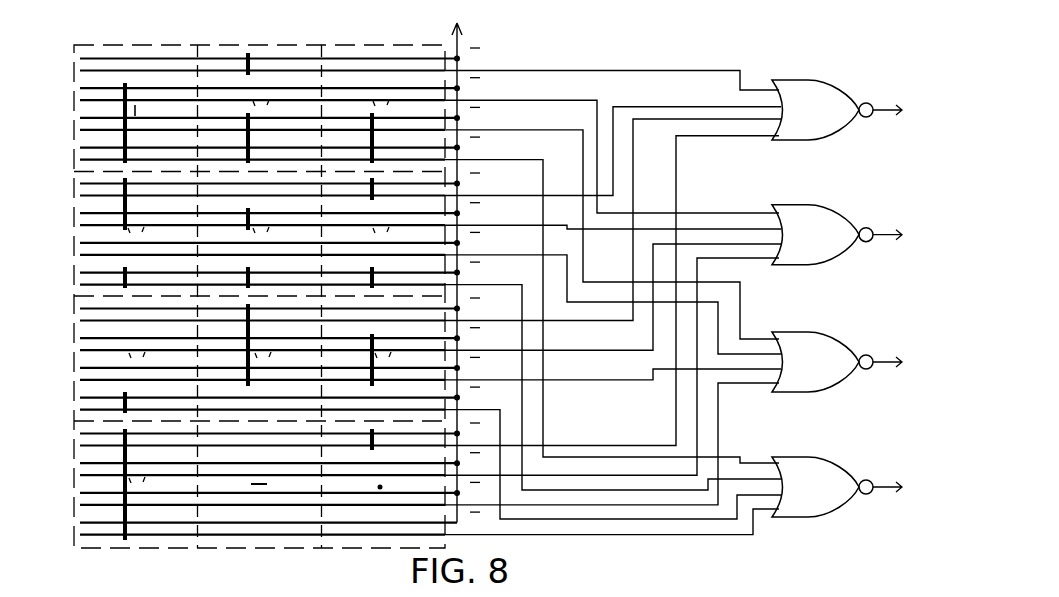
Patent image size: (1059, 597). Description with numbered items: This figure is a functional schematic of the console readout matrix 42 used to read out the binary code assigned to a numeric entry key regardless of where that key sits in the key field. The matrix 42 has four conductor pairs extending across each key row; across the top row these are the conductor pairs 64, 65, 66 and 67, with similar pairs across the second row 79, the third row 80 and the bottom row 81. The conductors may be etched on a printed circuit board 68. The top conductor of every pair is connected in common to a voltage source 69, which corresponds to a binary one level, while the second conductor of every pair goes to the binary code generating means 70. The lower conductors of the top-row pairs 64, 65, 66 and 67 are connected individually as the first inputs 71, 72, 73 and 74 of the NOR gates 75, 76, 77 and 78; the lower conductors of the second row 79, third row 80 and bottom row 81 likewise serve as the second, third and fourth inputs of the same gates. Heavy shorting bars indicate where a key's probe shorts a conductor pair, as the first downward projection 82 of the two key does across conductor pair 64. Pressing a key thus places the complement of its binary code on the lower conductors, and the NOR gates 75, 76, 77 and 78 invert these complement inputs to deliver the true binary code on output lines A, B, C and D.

The matrix 42 is at (169, 34).
The conductor pair 64 is at (76, 56).
The conductor pair 65 is at (76, 86).
The conductor pair 66 is at (76, 115).
The conductor pair 67 is at (76, 145).
The printed circuit board 68 is at (343, 44).
The voltage source 69 is at (457, 43).
The binary code generating means 70 is at (808, 68).
The first input 71 is at (693, 70).
The first input 72 is at (718, 213).
The first input 73 is at (743, 316).
The first input 74 is at (733, 456).
The NOR gate 75 is at (845, 93).
The NOR gate 76 is at (849, 218).
The NOR gate 77 is at (846, 338).
The NOR gate 78 is at (836, 462).
The second row 79 is at (78, 180).
The third row 80 is at (78, 306).
The bottom row 81 is at (78, 431).
The first downward projection 82 is at (251, 62).